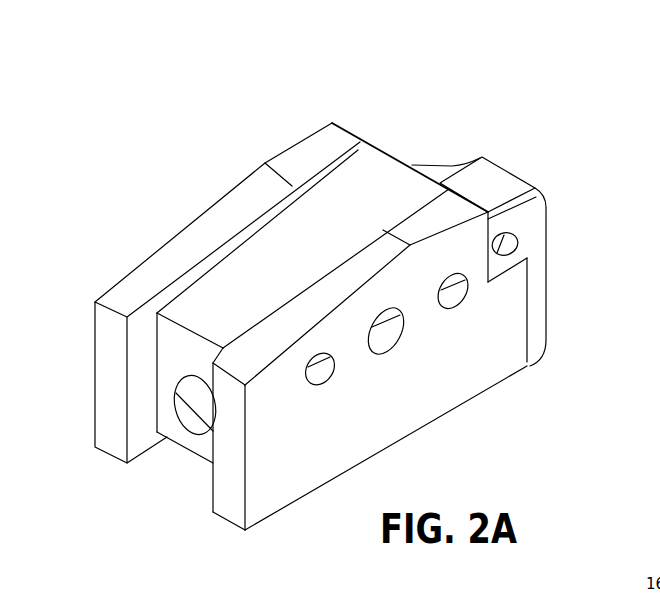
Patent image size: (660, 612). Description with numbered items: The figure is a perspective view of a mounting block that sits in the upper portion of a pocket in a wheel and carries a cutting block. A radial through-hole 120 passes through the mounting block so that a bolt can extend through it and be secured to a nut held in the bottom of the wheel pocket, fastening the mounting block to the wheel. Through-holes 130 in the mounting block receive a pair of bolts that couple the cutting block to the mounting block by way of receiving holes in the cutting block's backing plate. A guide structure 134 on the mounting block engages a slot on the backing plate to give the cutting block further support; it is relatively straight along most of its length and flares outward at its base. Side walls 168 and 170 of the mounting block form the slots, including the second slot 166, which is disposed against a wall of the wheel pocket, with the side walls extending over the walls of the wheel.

The radial through-hole 120 is at (210, 390).
The through-holes 130 is at (508, 238).
The guide structure 134 is at (485, 172).
The second slot 166 is at (233, 273).
The side wall 168 is at (141, 298).
The side wall 170 is at (328, 287).